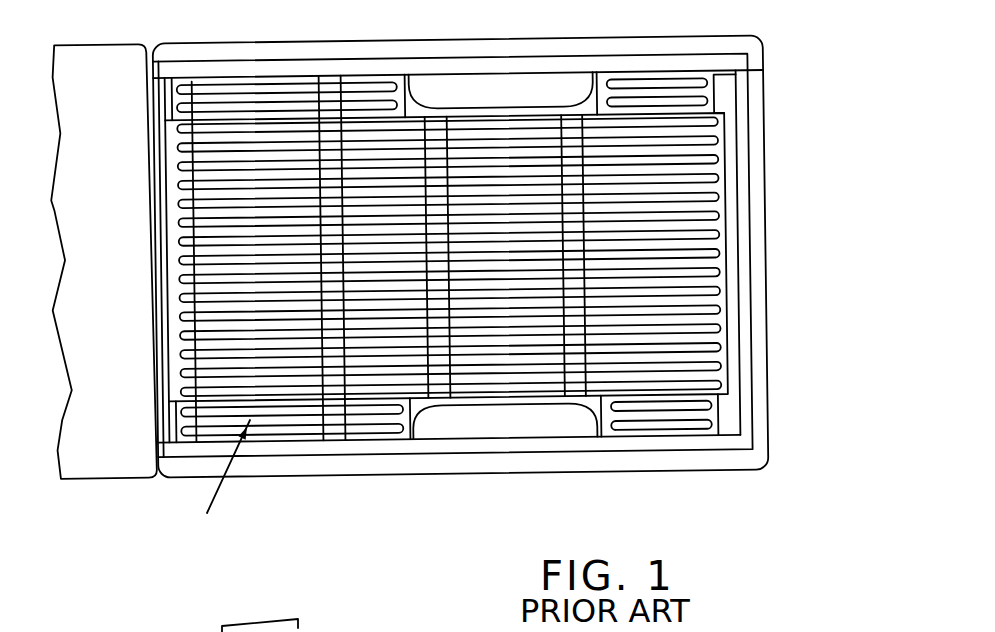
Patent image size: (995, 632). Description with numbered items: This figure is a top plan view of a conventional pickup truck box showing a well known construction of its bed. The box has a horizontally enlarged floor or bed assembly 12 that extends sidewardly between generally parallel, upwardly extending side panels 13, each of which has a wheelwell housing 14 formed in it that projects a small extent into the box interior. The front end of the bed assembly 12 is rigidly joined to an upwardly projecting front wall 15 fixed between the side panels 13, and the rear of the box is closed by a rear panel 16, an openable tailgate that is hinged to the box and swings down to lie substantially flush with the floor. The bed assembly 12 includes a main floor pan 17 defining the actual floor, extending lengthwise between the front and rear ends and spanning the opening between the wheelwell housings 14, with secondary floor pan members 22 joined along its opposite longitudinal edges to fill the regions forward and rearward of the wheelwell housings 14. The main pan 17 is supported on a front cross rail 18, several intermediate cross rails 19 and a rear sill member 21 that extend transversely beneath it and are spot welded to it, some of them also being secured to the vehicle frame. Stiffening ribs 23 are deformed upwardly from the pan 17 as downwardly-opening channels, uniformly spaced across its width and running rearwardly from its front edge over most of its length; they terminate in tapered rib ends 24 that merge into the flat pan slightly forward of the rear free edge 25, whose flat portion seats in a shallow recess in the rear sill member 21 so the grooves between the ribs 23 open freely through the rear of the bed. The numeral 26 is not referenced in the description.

The floor or bed assembly 12 is at (219, 486).
The side panels 13 is at (440, 13).
The wheelwell housings 14 is at (512, 85).
The front wall or panel 15 is at (165, 410).
The rear panel or tailgate 16 is at (750, 222).
The main bed member or floor pan 17 is at (264, 157).
The front cross rail 18 is at (182, 97).
The intermediate cross rails 19 is at (332, 108).
The rear cross rail or sill member 21 is at (727, 90).
The secondary bed or floor pan members 22 is at (213, 97).
The stiffening ribs 23 is at (710, 197).
The tapered rib ends 24 is at (703, 198).
The rear free edge 25 is at (726, 127).
The fin end tab 26 is at (732, 367).